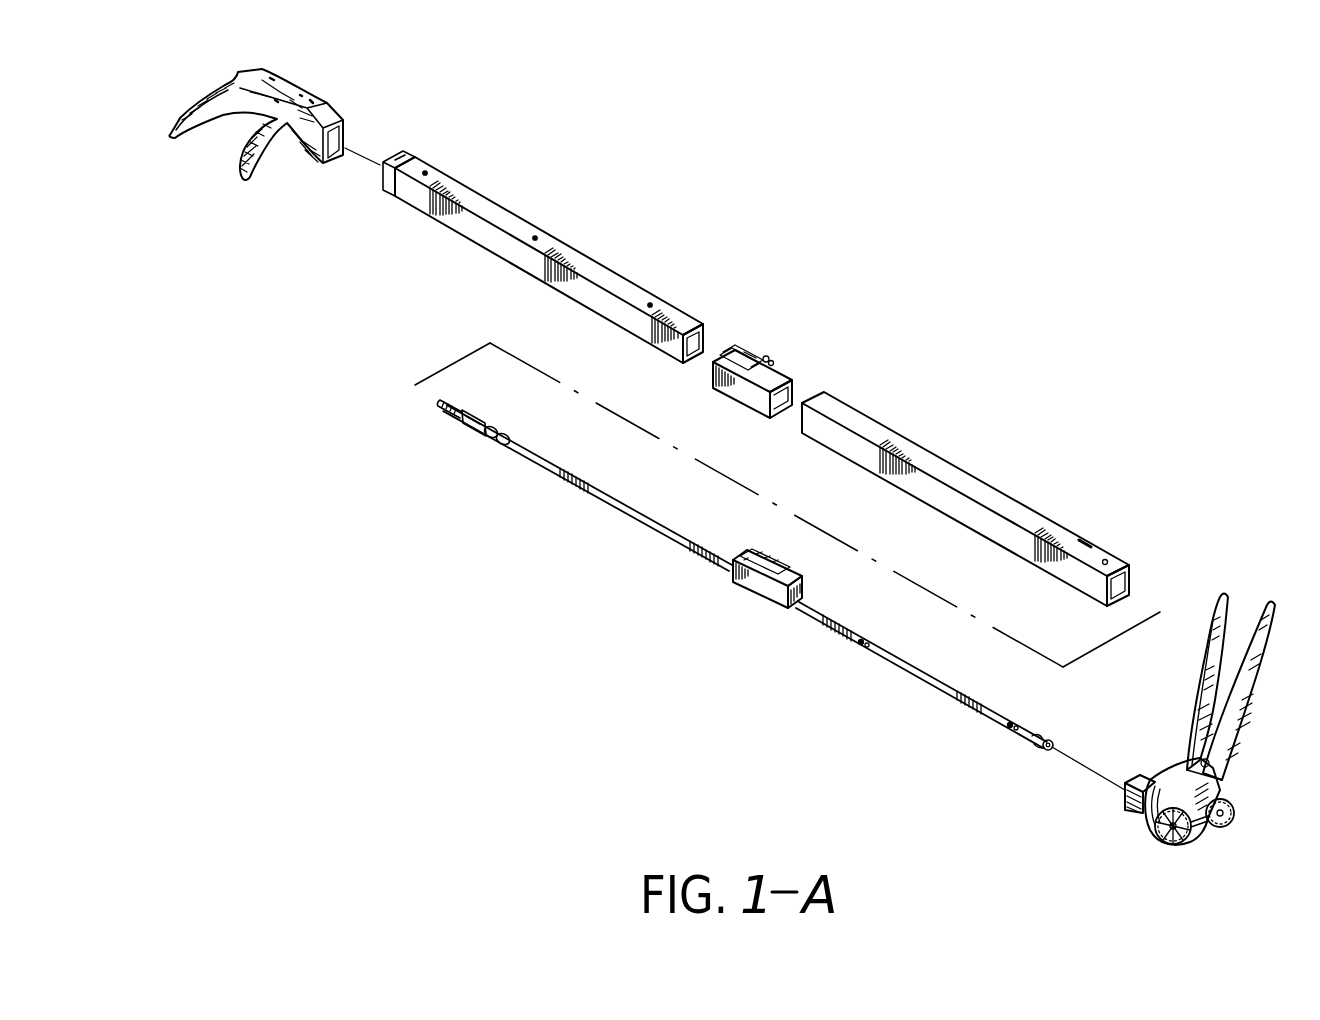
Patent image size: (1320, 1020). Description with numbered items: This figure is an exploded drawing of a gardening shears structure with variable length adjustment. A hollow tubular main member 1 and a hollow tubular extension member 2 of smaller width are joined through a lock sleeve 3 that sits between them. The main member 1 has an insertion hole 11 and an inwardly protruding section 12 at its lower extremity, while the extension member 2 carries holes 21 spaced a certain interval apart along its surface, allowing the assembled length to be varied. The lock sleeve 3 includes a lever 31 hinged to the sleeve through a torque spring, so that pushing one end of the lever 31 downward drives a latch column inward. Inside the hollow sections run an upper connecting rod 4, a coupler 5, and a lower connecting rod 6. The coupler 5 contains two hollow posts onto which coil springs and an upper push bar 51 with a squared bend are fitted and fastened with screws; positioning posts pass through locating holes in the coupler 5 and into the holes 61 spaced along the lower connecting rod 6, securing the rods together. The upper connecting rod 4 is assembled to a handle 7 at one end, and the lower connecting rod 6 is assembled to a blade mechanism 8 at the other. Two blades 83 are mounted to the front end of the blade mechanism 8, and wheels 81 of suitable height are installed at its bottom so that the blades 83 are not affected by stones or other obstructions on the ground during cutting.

The main member 1 is at (942, 440).
The extension member 2 is at (565, 181).
The lock sleeve 3 is at (752, 358).
The upper connecting rod 4 is at (551, 490).
The coupler 5 is at (739, 615).
The lower connecting rod 6 is at (924, 697).
The handle 7 is at (263, 182).
The blade mechanism 8 is at (1212, 661).
The insertion hole 11 is at (1106, 558).
The inwardly protruding section 12 is at (1089, 545).
The holes 21 is at (426, 171).
The lever 31 is at (746, 344).
The upper push bar 51 is at (752, 582).
The holes 61 is at (860, 648).
The wheels 81 is at (1238, 806).
The blades 83 is at (1250, 578).